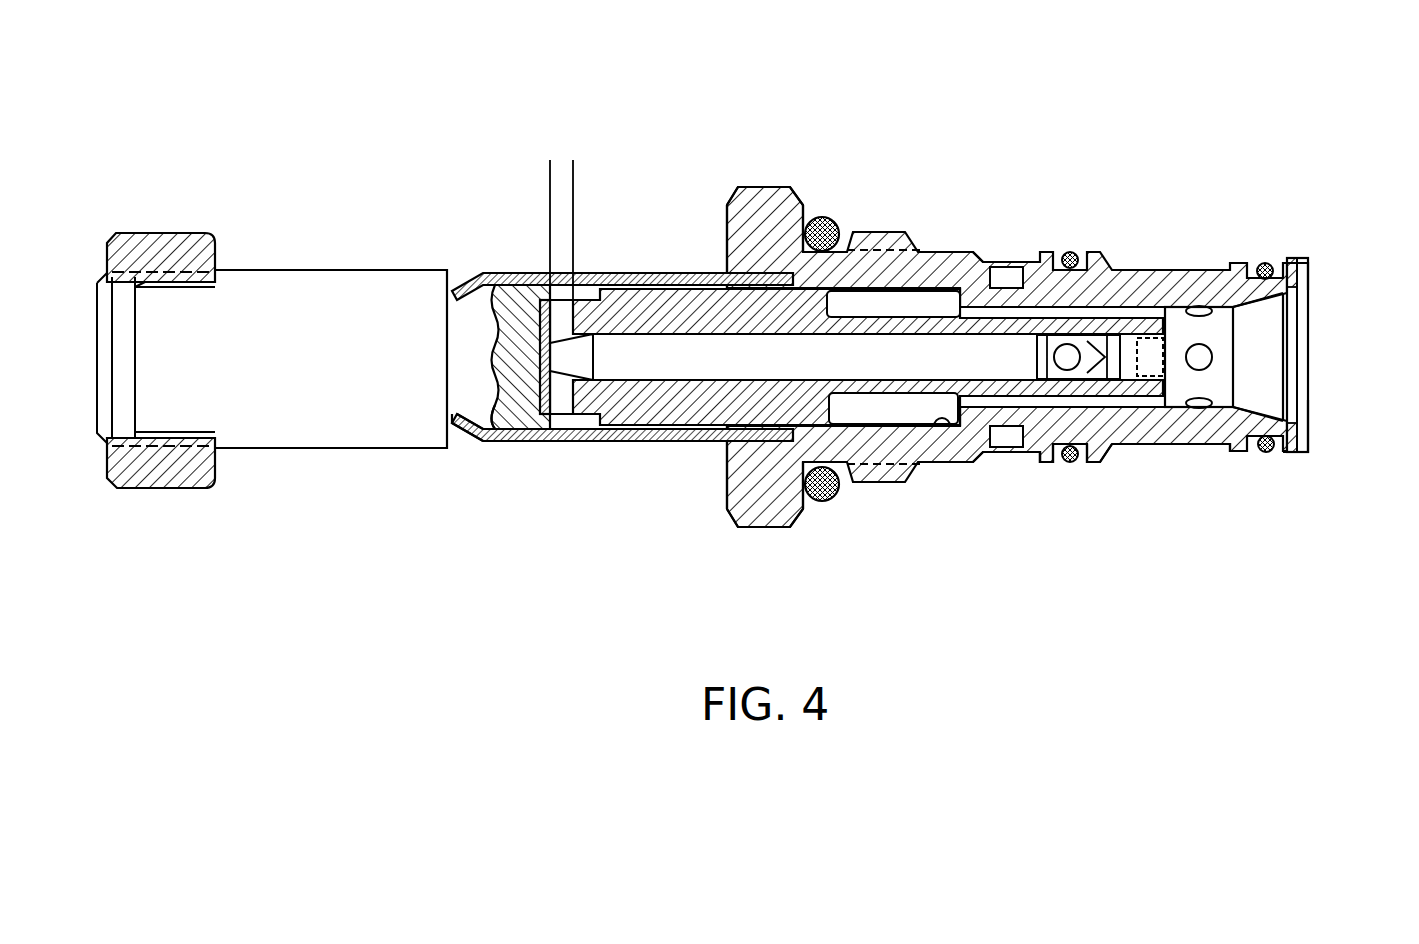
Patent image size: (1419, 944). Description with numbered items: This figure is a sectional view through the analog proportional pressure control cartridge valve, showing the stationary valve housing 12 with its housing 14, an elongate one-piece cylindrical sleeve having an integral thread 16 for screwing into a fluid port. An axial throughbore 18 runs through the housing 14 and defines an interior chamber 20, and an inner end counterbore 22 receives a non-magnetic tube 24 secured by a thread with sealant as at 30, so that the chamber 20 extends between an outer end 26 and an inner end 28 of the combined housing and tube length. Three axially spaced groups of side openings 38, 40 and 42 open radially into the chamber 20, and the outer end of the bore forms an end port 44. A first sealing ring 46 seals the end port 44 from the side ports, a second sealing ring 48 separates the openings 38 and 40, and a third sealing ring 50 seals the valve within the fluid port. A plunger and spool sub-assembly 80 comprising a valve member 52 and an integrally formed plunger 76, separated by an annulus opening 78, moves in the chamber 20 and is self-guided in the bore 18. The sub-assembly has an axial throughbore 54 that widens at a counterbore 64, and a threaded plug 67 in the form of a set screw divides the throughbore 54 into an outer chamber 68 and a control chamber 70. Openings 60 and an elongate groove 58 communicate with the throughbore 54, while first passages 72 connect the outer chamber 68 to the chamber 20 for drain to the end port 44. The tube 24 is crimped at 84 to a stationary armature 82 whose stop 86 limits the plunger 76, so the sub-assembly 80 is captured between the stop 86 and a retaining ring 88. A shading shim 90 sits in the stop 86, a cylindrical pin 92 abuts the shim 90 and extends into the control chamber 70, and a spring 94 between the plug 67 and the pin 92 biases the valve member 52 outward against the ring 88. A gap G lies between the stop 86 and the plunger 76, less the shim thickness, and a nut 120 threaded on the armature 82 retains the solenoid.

The valve housing 12 is at (917, 158).
The housing 14 is at (960, 241).
The integral thread 16 is at (892, 494).
The axial throughbore 18 is at (948, 426).
The interior chamber 20 is at (848, 302).
The inner end counterbore 22 is at (745, 443).
The non-magnetic tube 24 is at (651, 274).
The outer end 26 is at (1312, 280).
The inner end 28 is at (507, 268).
The thread with sealant 30 is at (754, 268).
The first port openings 38 is at (1006, 460).
The second port openings 40 is at (1137, 458).
The third port openings 42 is at (1209, 455).
The end port 44 is at (1302, 414).
The first sealing ring 46 is at (1271, 460).
The second sealing ring 48 is at (1070, 468).
The third sealing ring 50 is at (822, 507).
The valve member 52 is at (1073, 252).
The axial throughbore 54 is at (688, 368).
The elongate circumferential groove 58 is at (1043, 455).
The openings 60 is at (1205, 354).
The counterbore 64 is at (1268, 263).
The threaded plug 67 is at (1225, 318).
The outer chamber 68 is at (1250, 337).
The control chamber 70 is at (1093, 355).
The first passages 72 is at (1160, 340).
The plunger 76 is at (697, 300).
The annulus opening 78 is at (875, 424).
The plunger and spool sub-assembly 80 is at (985, 268).
The stationary armature 82 is at (320, 452).
The crimp 84 is at (466, 442).
The stop 86 is at (535, 430).
The retaining ring 88 is at (1300, 298).
The shading shim 90 is at (548, 398).
The cylindrical pin 92 is at (613, 345).
The spring 94 is at (1100, 415).
The nut 120 is at (160, 492).
The gap G is at (561, 214).